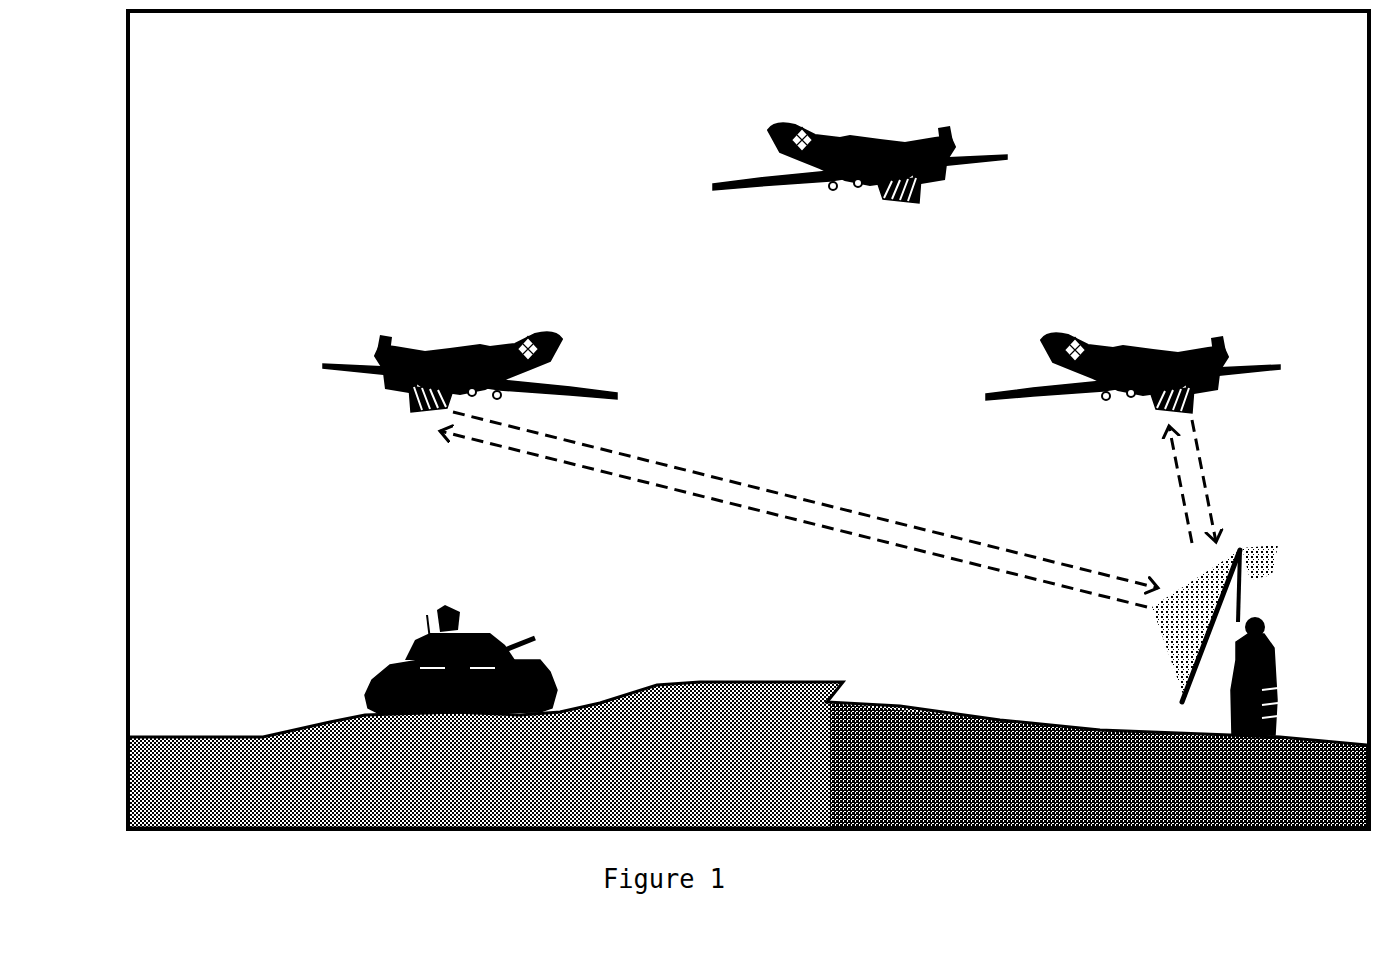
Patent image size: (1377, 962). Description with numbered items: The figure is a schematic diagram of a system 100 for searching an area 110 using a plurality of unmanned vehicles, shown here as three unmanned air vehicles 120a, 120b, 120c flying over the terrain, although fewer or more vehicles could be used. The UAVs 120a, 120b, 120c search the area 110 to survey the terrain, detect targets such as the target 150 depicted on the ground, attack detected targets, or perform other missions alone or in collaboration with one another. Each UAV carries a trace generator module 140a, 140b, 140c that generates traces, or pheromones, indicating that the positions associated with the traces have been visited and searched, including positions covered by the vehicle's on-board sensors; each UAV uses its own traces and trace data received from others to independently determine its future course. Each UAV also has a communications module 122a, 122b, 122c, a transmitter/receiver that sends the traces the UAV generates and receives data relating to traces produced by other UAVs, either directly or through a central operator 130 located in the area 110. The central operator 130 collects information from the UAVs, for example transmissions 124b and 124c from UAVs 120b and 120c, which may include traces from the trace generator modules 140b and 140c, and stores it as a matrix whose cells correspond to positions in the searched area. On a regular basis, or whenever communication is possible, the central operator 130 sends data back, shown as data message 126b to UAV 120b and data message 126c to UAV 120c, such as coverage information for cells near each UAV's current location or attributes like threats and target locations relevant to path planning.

The system 100 is at (378, 164).
The area 110 is at (308, 724).
The unmanned air vehicle 120a is at (960, 127).
The unmanned air vehicle 120b is at (1240, 340).
The unmanned air vehicle 120c is at (360, 340).
The communications module 122a is at (934, 193).
The communications module 122b is at (1214, 407).
The communications module 122c is at (409, 426).
The transmission 124b is at (1210, 469).
The transmission 124c is at (810, 496).
The data message 126b is at (1160, 469).
The data message 126c is at (740, 518).
The central operator 130 is at (1289, 653).
The trace generator module 140a is at (818, 125).
The trace generator module 140b is at (1091, 337).
The trace generator module 140c is at (536, 320).
The target 150 is at (386, 642).